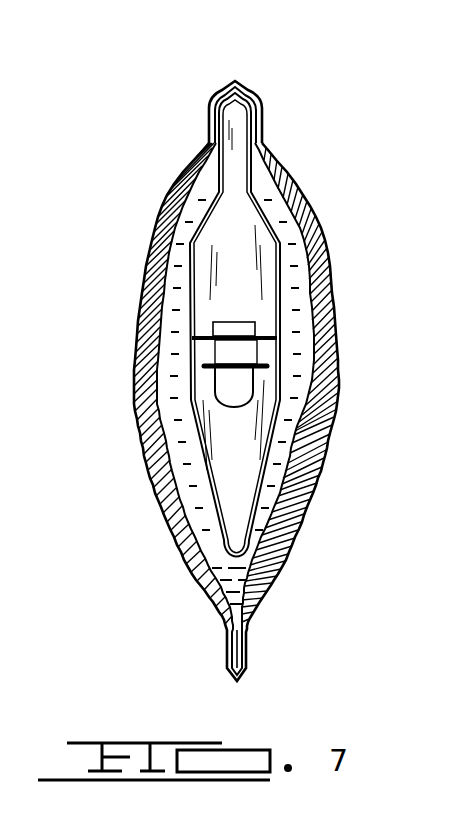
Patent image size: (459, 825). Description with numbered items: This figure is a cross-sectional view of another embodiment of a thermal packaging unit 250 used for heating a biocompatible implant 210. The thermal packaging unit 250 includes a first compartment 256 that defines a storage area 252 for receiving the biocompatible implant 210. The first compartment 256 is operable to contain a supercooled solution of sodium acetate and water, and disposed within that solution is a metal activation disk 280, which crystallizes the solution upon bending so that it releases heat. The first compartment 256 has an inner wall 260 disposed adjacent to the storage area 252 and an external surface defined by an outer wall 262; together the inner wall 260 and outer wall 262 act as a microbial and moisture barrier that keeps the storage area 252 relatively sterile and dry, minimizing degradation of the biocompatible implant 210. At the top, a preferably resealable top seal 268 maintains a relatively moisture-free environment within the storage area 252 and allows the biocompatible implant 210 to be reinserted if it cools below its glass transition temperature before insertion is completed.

The thermal packaging unit 250 is at (165, 140).
The storage area 252 is at (233, 208).
The first compartment 256 is at (183, 265).
The inner wall 260 is at (178, 409).
The outer wall 262 is at (160, 504).
The top seal 268 is at (232, 83).
The metal activation disk 280 is at (192, 574).
The biocompatible implant 210 is at (221, 357).